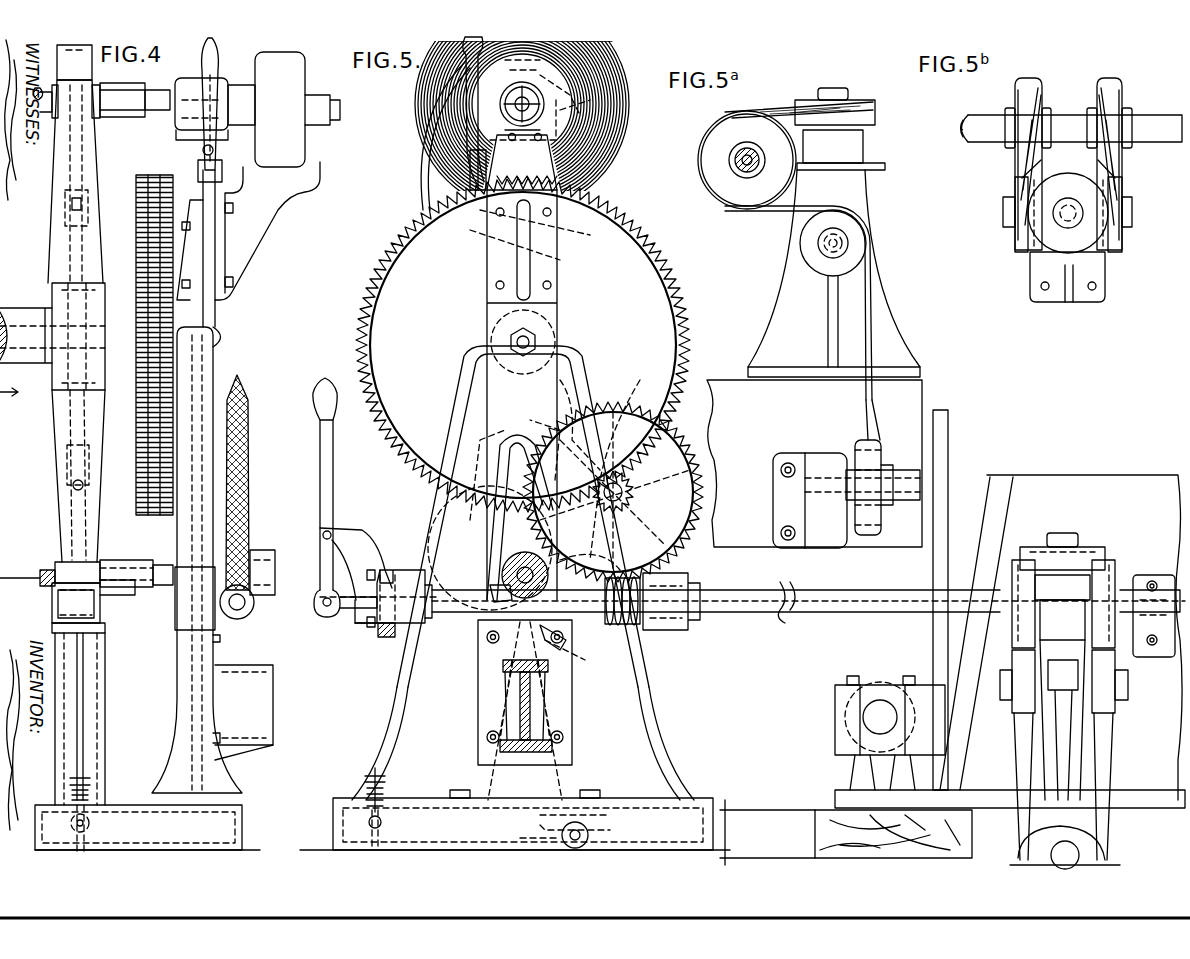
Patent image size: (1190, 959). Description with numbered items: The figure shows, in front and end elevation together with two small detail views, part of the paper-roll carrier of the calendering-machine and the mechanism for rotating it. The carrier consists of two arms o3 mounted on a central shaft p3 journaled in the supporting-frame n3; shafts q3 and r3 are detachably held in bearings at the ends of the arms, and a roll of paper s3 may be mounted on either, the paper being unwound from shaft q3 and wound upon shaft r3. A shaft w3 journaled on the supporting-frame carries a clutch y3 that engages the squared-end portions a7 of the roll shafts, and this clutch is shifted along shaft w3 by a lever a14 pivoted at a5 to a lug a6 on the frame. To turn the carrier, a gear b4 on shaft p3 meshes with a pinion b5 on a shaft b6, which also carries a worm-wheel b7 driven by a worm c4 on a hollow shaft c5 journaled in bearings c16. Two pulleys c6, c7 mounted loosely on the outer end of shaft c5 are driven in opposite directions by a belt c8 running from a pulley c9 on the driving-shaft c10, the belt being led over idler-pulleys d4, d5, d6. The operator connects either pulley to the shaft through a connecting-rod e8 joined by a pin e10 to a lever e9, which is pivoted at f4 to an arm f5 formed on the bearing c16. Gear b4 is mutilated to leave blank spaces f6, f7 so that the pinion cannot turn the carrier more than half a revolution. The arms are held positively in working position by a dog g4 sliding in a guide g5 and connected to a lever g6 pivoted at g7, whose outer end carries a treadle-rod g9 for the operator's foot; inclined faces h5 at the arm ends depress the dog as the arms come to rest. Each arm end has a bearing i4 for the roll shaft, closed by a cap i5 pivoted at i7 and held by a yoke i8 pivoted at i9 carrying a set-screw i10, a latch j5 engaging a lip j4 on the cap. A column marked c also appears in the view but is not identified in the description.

In FIG. 4, the carrier arms o3 is at (66, 248).
In FIG. 5, the carrier arms o3 is at (440, 174).
In FIG. 4, the inclined faces h5 is at (62, 48).
In FIG. 5, the inclined faces h5 is at (480, 648).
In FIG. 4, the shaft q3 is at (44, 102).
In FIG. 4, the bearing i4 is at (103, 116).
In FIG. 4, the squared-end portions a7 is at (160, 109).
In FIG. 5, the squared-end portions a7 is at (520, 555).
In FIG. 4, the shaft w3 is at (180, 85).
In FIG. 4, the clutch y3 is at (186, 128).
In FIG. 4, the lever a14 is at (218, 55).
In FIG. 5, the lever a14 is at (462, 46).
In FIG. 4, the pivot a5 is at (203, 152).
In FIG. 4, the blank space f6 is at (136, 200).
In FIG. 5, the blank space f6 is at (455, 190).
In FIG. 4, the frame column c is at (228, 358).
In FIG. 4, the worm-wheel b7 is at (249, 425).
In FIG. 5, the worm-wheel b7 is at (692, 545).
In FIG. 4, the latch j5 is at (67, 470).
In FIG. 4, the yoke i8 is at (85, 572).
In FIG. 5, the yoke i8 is at (598, 64).
In FIG. 4, the shaft r3 is at (48, 572).
In FIG. 4, the cap i5 is at (70, 600).
In FIG. 4, the dog g4 is at (106, 630).
In FIG. 5, the dog g4 is at (502, 666).
In FIG. 4, the guide g5 is at (98, 706).
In FIG. 4, the treadle-rod g9 is at (92, 784).
In FIG. 5, the treadle-rod g9 is at (386, 790).
In FIG. 4, the lever g6 is at (92, 824).
In FIG. 5, the lever g6 is at (366, 826).
In FIG. 4, the central shaft p3 is at (112, 305).
In FIG. 5, the central shaft p3 is at (560, 342).
In FIG. 5, the pivot i7 is at (440, 80).
In FIG. 5, the roll of paper s3 is at (596, 122).
In FIG. 5, the set-screw i10 is at (612, 96).
In FIG. 5, the lug a6 is at (470, 162).
In FIG. 5, the lip j4 is at (560, 215).
In FIG. 5, the gear b4 is at (636, 286).
In FIG. 5, the supporting-frame n3 is at (474, 365).
In FIG. 5, the blank space f7 is at (628, 400).
In FIG. 5, the pinion b5 is at (702, 478).
In FIG. 5, the shaft b6 is at (624, 500).
In FIG. 5, the lever e9 is at (320, 470).
In FIG. 5, the pivot f4 is at (323, 533).
In FIG. 5, the arm f5 is at (350, 543).
In FIG. 5, the pin e10 is at (322, 603).
In FIG. 5, the connecting-rod e8 is at (340, 618).
In FIG. 5, the bearings c16 is at (392, 626).
In FIG. 5, the worm-shaft c5 is at (795, 612).
In FIG. 5a, the worm-shaft c5 is at (730, 162).
In FIG. 5b, the worm-shaft c5 is at (985, 135).
In FIG. 5, the worm c4 is at (666, 634).
In FIG. 5, the pivot i9 is at (566, 643).
In FIG. 5, the pivot g7 is at (592, 836).
In FIG. 5, the idler-pulley d4 is at (1085, 548).
In FIG. 5a, the idler-pulley d4 is at (860, 104).
In FIG. 5b, the idler-pulley d4 is at (1082, 240).
In FIG. 5, the pulley c6 is at (1018, 558).
In FIG. 5a, the pulley c6 is at (748, 194).
In FIG. 5b, the pulley c6 is at (1042, 88).
In FIG. 5, the pulley c7 is at (1116, 580).
In FIG. 5b, the pulley c7 is at (1124, 88).
In FIG. 5, the idler-pulley d5 is at (1000, 690).
In FIG. 5a, the idler-pulley d5 is at (852, 233).
In FIG. 5b, the idler-pulley d5 is at (1010, 232).
In FIG. 5, the idler-pulley d6 is at (1128, 700).
In FIG. 5b, the idler-pulley d6 is at (1130, 232).
In FIG. 5, the belt c8 is at (1105, 755).
In FIG. 5a, the belt c8 is at (870, 328).
In FIG. 5b, the belt c8 is at (1112, 160).
In FIG. 5, the pulley c9 is at (1040, 840).
In FIG. 5a, the pulley c9 is at (880, 440).
In FIG. 5, the driving-shaft c10 is at (1082, 860).
In FIG. 5a, the driving-shaft c10 is at (910, 490).